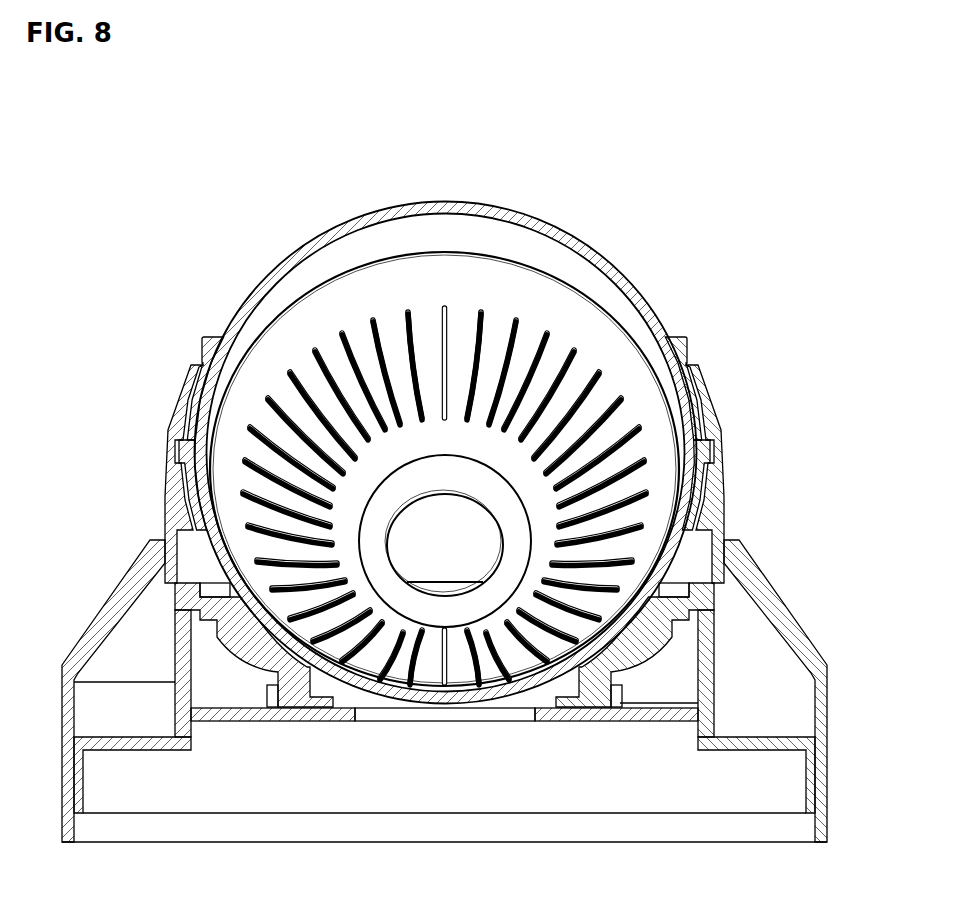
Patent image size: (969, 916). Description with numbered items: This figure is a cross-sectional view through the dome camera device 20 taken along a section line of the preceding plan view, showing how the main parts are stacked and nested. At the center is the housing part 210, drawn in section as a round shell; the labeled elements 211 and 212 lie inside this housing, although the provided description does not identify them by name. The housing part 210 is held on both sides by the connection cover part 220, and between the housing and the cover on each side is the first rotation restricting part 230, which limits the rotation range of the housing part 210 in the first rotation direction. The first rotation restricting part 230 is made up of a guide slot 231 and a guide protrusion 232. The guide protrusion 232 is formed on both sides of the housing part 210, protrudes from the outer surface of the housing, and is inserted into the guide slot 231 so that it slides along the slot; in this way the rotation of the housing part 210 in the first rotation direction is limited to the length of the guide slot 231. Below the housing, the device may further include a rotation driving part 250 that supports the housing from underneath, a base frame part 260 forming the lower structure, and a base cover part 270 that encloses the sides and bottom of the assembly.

The dome camera device 20 is at (444, 112).
The housing part 210 is at (338, 228).
The shaft hole 211 is at (455, 522).
The drum 212 is at (599, 399).
The connection cover part 220 is at (163, 504).
The first rotation restricting part 230 is at (443, 433).
The guide slot 231 is at (186, 417).
The guide protrusion 232 is at (186, 452).
The rotation driving part 250 is at (587, 688).
The base frame part 260 is at (736, 742).
The base cover part 270 is at (780, 593).